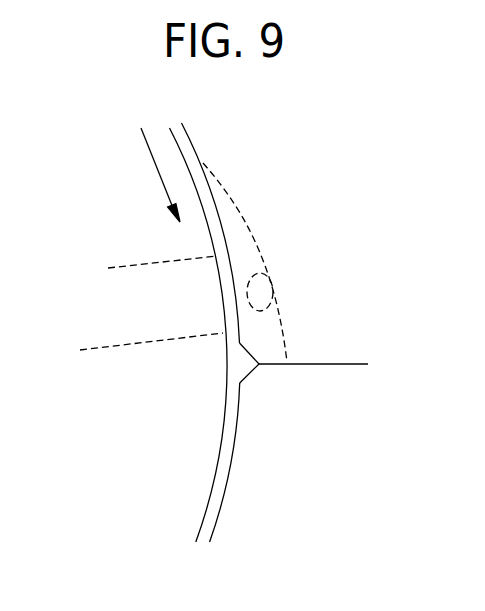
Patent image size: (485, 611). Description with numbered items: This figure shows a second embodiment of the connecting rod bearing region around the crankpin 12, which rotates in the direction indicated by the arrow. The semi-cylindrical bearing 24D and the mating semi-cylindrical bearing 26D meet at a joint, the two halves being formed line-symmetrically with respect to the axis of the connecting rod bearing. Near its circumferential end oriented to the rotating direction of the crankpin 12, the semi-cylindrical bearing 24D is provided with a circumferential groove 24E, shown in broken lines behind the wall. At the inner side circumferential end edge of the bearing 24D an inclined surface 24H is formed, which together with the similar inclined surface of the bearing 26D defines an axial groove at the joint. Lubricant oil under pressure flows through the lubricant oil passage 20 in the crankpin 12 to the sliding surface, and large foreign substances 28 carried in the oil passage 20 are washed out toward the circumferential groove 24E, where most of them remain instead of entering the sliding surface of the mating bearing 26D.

The crankpin 12 is at (200, 479).
The lubricant oil passage 20 is at (108, 268).
The semi-cylindrical bearing 24D is at (302, 150).
The circumferential groove 24E is at (255, 233).
The inclined surface 24H is at (247, 358).
The mating semi-cylindrical bearing 26D is at (330, 455).
The foreign substances 28 is at (262, 292).